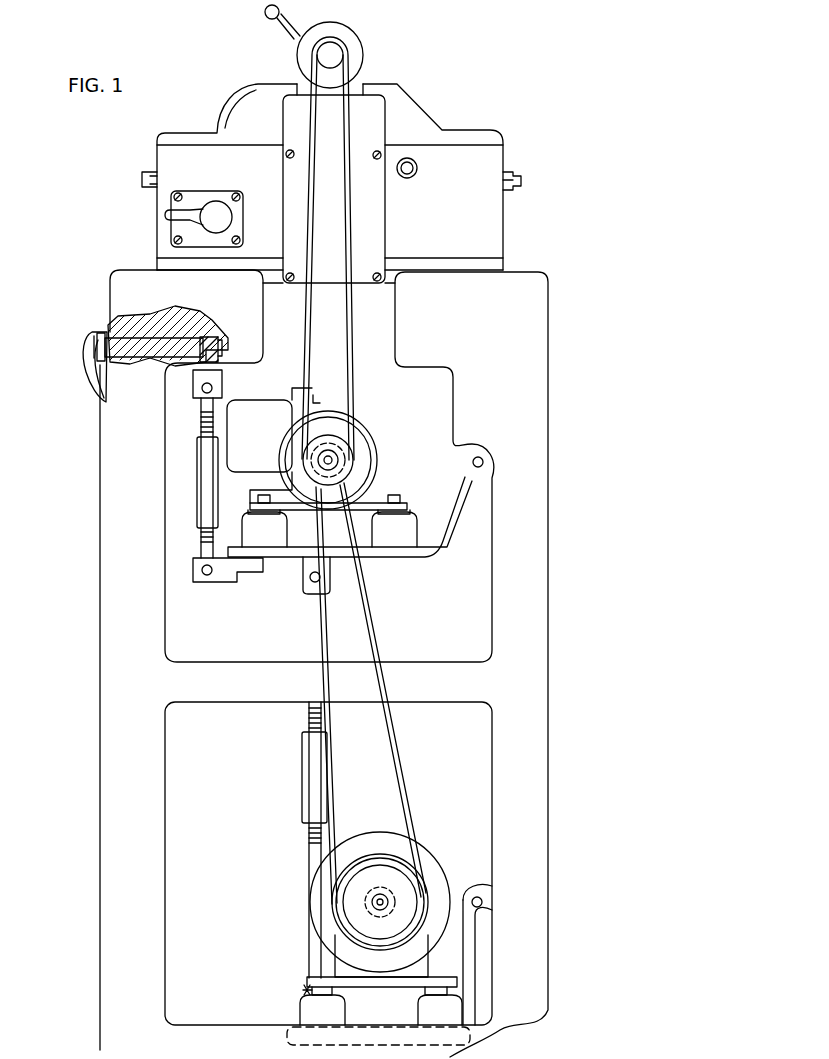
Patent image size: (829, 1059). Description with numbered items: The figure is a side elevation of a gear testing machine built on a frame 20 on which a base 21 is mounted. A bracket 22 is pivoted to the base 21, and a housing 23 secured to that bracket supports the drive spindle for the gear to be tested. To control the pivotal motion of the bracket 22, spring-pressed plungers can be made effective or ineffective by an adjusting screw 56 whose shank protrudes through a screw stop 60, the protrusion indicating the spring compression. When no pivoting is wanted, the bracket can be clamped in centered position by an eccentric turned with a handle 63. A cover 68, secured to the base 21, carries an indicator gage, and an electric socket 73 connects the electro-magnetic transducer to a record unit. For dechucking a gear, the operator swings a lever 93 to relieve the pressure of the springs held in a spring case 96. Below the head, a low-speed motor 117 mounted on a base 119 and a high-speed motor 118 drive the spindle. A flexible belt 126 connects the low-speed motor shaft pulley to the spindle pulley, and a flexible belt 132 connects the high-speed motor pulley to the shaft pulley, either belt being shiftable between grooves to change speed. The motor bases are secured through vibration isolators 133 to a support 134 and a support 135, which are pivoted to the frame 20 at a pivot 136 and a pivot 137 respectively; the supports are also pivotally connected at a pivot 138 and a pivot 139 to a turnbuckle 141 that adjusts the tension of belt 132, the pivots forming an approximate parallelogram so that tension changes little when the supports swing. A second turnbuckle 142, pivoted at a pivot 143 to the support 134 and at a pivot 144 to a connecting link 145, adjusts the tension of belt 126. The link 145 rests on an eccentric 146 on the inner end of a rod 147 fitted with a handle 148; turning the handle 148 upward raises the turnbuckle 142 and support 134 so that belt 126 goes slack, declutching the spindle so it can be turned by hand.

The frame 20 is at (507, 571).
The base 21 is at (416, 251).
The bracket 22 is at (358, 86).
The housing 23 is at (302, 54).
The adjusting screw 56 is at (522, 181).
The screw stop 60 is at (512, 192).
The handle 63 is at (215, 205).
The cover 68 is at (416, 116).
The electric socket 73 is at (411, 176).
The lever 93 is at (276, 28).
The spring case 96 is at (334, 50).
The low-speed motor 117 is at (246, 438).
The high-speed motor 118 is at (425, 862).
The base 119 is at (385, 490).
The flexible belt 126 is at (353, 323).
The flexible belt 132 is at (399, 742).
The vibration isolators 133 is at (423, 998).
The support 134 is at (398, 550).
The support 135 is at (474, 999).
The pivot 136 is at (484, 462).
The pivot 137 is at (483, 903).
The pivot 138 is at (310, 579).
The pivot 139 is at (302, 990).
The turnbuckle 141 is at (312, 760).
The turnbuckle 142 is at (206, 490).
The pivot 143 is at (205, 576).
The pivot 144 is at (212, 388).
The connecting link 145 is at (228, 360).
The eccentric 146 is at (206, 337).
The rod 147 is at (130, 340).
The handle 148 is at (92, 372).